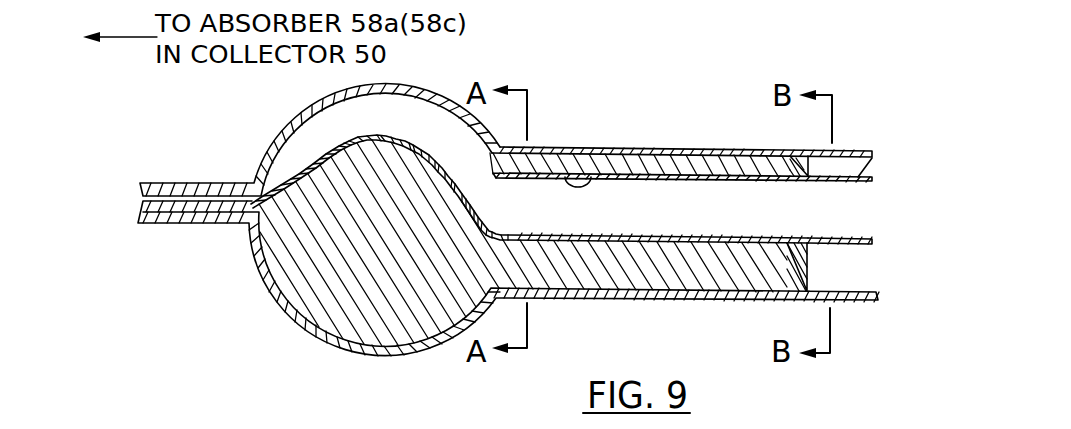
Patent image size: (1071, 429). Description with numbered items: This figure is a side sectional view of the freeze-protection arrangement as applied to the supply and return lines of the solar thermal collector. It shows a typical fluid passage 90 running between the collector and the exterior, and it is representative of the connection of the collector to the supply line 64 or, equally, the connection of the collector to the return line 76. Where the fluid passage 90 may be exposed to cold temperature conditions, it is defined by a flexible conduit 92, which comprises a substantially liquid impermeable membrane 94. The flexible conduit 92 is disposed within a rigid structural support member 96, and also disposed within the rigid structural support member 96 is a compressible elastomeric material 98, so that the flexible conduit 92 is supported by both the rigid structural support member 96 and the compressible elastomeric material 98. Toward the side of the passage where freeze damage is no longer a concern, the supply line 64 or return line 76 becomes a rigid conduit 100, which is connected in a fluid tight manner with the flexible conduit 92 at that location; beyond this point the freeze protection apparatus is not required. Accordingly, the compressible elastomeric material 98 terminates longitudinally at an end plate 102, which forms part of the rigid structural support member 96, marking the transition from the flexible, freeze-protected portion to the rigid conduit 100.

The supply line 64 is at (893, 140).
The return line 76 is at (868, 173).
The fluid passage 90 is at (673, 187).
The flexible conduit 92 is at (661, 254).
The liquid impermeable membrane 94 is at (555, 177).
The rigid structural support member 96 is at (623, 151).
The compressible elastomeric material 98 is at (588, 268).
The rigid conduit 100 is at (855, 246).
The end plate 102 is at (798, 160).